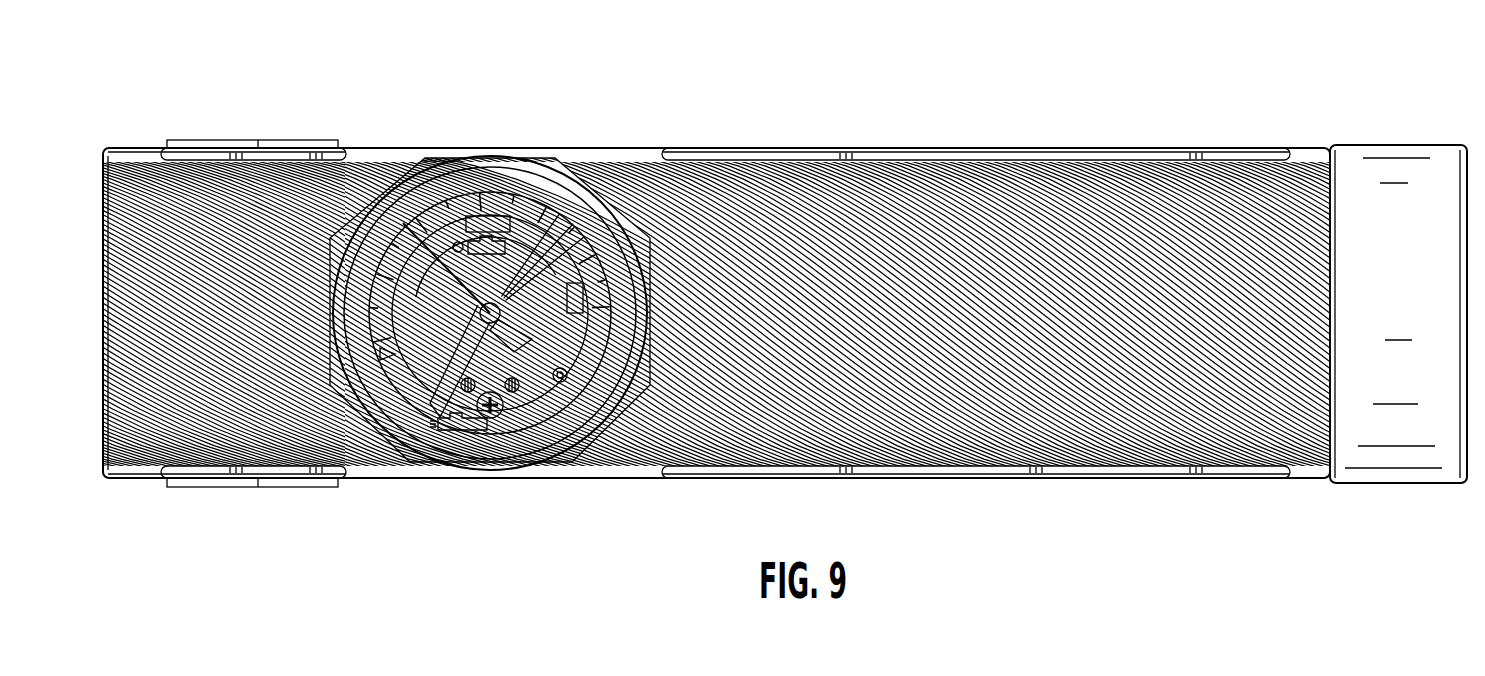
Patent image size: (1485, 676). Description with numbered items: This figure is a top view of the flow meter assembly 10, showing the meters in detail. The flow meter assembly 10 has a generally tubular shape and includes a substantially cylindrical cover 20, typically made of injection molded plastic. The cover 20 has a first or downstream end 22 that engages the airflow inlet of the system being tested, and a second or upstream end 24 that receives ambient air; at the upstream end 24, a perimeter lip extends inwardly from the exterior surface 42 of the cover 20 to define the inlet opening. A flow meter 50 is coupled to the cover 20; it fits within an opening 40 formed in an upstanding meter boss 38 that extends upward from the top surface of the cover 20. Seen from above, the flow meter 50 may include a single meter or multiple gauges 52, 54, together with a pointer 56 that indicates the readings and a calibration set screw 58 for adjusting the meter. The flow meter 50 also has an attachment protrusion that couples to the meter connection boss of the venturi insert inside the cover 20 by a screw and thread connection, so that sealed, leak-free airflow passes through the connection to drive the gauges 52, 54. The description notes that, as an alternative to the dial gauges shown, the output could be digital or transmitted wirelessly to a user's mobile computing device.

The flow meter assembly 10 is at (1116, 67).
The cover 20 is at (852, 148).
The downstream end 22 is at (1392, 163).
The upstream end 24 is at (128, 165).
The meter boss 38 is at (368, 205).
The opening 40 is at (527, 172).
The exterior surface 42 is at (742, 225).
The flow meter 50 is at (442, 190).
The gauge 52 is at (423, 403).
The gauge 54 is at (567, 312).
The pointer 56 is at (436, 388).
The calibration set screw 58 is at (490, 420).